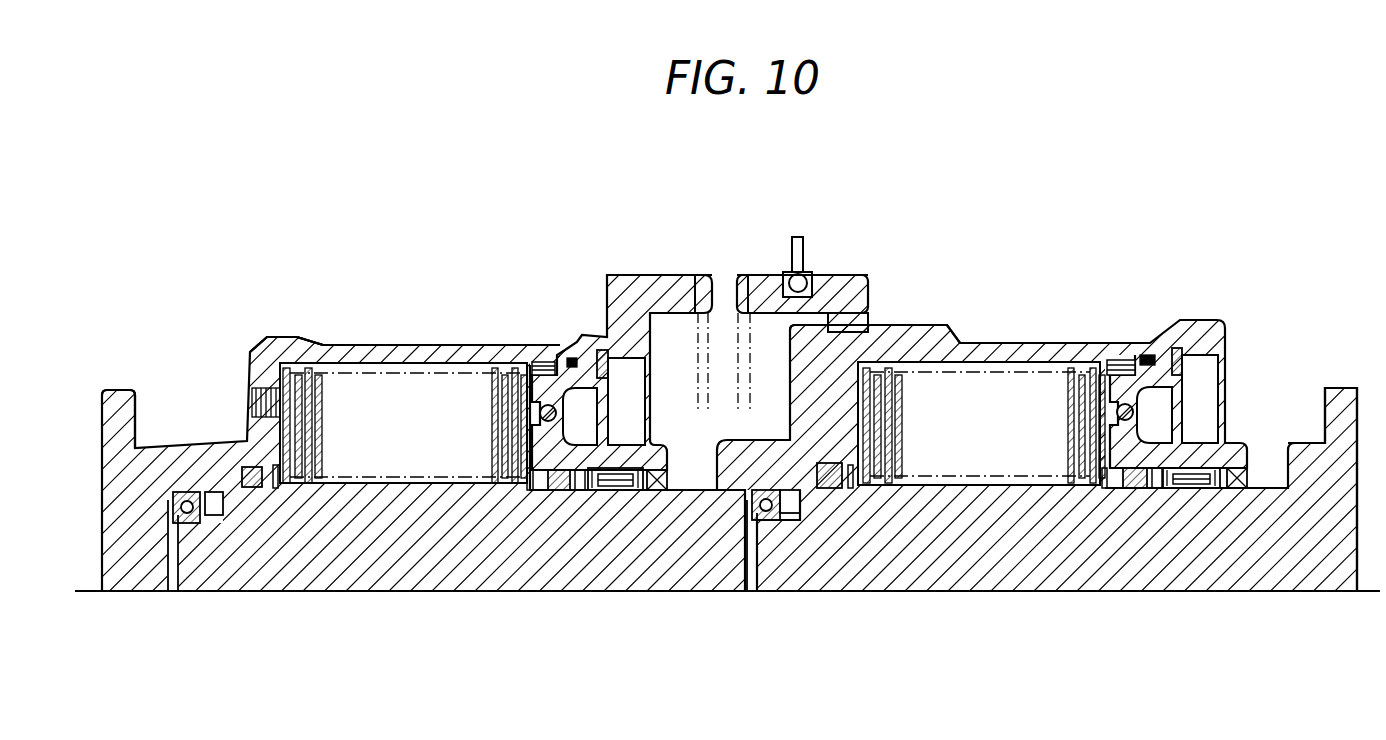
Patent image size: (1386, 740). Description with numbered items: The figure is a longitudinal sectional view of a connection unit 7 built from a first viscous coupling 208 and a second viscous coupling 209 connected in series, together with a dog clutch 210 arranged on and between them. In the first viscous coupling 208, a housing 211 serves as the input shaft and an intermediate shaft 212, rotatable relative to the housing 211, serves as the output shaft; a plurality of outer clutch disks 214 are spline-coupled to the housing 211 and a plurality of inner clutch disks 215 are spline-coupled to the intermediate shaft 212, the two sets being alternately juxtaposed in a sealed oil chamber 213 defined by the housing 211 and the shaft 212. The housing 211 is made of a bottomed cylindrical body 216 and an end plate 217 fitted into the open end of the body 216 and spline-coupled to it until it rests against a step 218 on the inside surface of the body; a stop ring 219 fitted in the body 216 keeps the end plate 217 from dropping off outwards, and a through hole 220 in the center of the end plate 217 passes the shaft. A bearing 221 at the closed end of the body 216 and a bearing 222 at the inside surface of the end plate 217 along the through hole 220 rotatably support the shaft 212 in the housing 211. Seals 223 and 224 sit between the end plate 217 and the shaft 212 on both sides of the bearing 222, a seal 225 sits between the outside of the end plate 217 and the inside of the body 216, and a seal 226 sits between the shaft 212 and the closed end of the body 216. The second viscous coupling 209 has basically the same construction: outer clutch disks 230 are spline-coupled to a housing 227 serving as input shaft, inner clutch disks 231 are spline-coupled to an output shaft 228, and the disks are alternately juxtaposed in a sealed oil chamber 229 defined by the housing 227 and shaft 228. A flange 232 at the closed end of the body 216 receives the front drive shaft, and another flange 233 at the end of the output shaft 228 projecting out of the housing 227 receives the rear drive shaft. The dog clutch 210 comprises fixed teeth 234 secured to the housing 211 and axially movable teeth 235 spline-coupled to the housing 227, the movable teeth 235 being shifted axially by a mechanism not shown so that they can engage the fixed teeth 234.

The connection unit 7 is at (885, 177).
The first viscous coupling 208 is at (693, 402).
The second viscous coupling 209 is at (693, 386).
The dog clutch 210 is at (722, 283).
The housing 211 is at (525, 291).
The intermediate shaft 212 is at (404, 557).
The sealed oil chamber 213 is at (412, 445).
The outer clutch disks 214 is at (300, 400).
The inner clutch disks 215 is at (525, 444).
The bottomed cylindrical body 216 is at (458, 350).
The end plate 217 is at (540, 357).
The step 218 is at (566, 357).
The stop ring 219 is at (600, 365).
The through hole 220 is at (580, 490).
The bearing 221 is at (187, 500).
The bearing 222 is at (618, 490).
The seal 223 is at (660, 490).
The seal 224 is at (560, 490).
The seal 225 is at (598, 405).
The seal 226 is at (255, 470).
The housing 227 is at (1027, 345).
The shaft 228 is at (1035, 555).
The sealed oil chamber 229 is at (999, 440).
The outer clutch disks 230 is at (866, 400).
The inner clutch disks 231 is at (1072, 460).
The flange 232 is at (119, 400).
The flange 233 is at (1336, 395).
The fixed teeth 234 is at (682, 297).
The movable teeth 235 is at (762, 293).